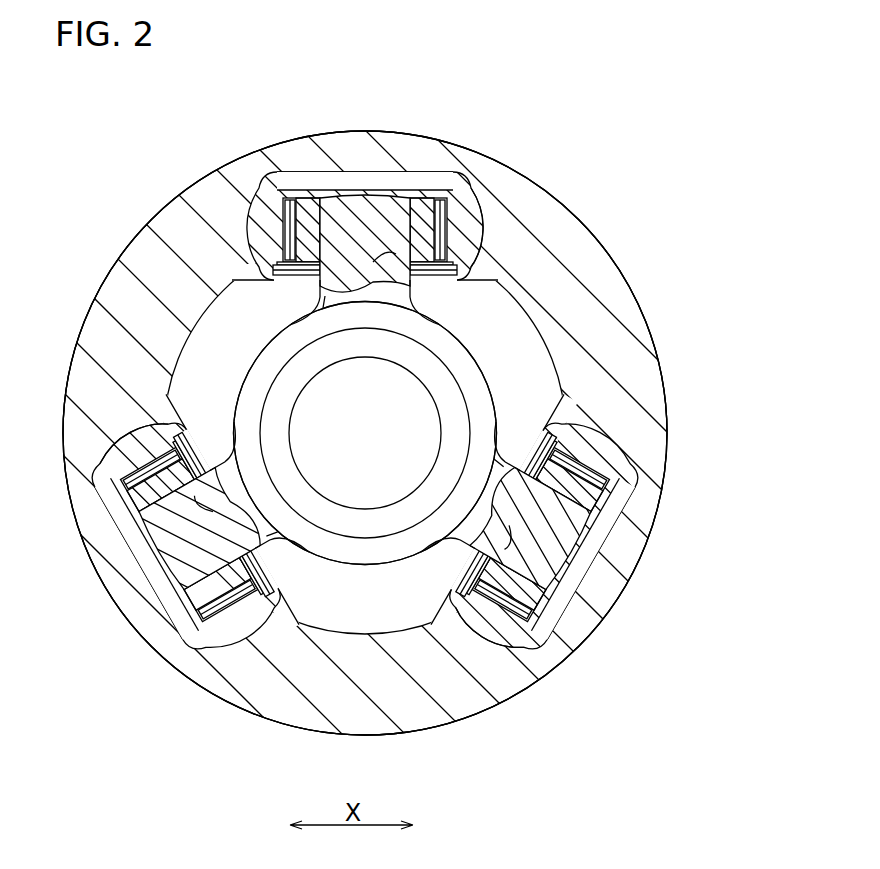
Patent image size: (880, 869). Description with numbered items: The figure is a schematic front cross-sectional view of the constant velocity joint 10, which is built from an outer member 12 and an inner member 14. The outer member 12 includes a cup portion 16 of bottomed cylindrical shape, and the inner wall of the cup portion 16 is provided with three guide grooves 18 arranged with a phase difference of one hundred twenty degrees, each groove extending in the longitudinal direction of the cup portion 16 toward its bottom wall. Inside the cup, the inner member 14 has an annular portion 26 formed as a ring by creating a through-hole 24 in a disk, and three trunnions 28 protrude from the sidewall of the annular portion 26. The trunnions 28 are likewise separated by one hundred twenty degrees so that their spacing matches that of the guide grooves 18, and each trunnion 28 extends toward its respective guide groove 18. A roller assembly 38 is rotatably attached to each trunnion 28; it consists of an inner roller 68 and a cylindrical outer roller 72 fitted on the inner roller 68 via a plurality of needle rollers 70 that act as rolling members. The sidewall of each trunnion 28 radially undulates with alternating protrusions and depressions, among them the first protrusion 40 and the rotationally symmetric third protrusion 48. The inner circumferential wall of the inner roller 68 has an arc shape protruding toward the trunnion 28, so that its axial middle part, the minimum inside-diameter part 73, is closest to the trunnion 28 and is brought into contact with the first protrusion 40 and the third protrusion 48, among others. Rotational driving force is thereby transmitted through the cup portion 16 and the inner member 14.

The constant velocity joint 10 is at (271, 83).
The outer member 12 is at (410, 768).
The inner member 14 is at (489, 356).
The cup portion 16 is at (377, 725).
The guide grooves 18 is at (402, 175).
The through-hole 24 is at (302, 391).
The annular portion 26 is at (272, 353).
The trunnions 28 is at (357, 208).
The roller assembly 38 is at (452, 172).
The first protrusion 40 is at (283, 232).
The third protrusion 48 is at (458, 270).
The inner roller 68 is at (306, 215).
The needle rollers 70 is at (262, 218).
The outer roller 72 is at (484, 206).
The minimum inside-diameter part 73 is at (373, 262).